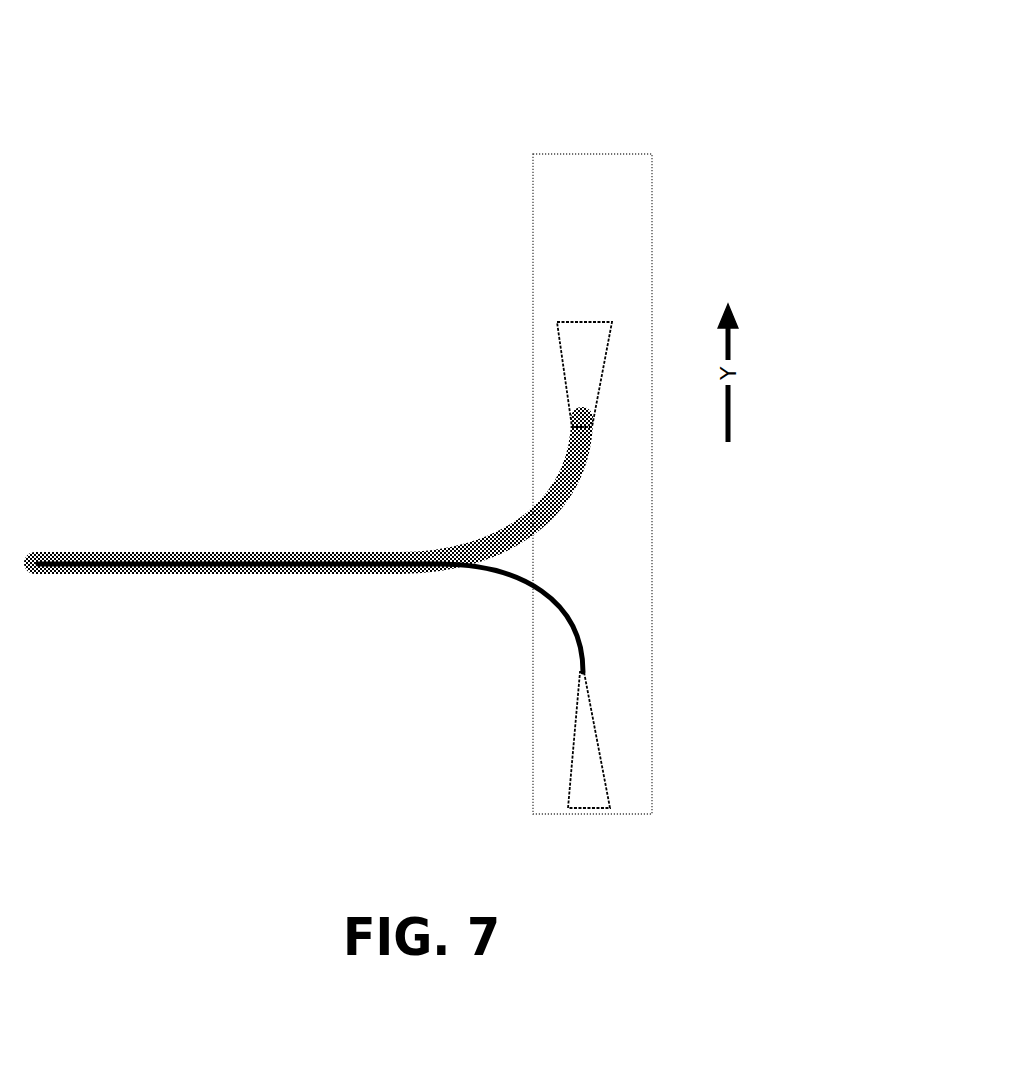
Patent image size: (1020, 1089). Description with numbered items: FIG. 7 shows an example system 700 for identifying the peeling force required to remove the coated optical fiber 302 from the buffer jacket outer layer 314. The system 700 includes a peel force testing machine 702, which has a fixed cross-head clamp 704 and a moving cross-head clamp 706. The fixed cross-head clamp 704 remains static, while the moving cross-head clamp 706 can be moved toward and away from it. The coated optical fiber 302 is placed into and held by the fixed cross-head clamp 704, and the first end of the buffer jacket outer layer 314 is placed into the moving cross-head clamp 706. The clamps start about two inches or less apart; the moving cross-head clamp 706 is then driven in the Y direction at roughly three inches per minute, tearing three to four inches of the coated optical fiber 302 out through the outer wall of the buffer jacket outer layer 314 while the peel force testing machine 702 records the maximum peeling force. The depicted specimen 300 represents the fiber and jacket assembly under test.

The system 700 is at (742, 48).
The peel force testing machine 702 is at (555, 176).
The fixed cross-head clamp 704 is at (603, 765).
The moving cross-head clamp 706 is at (557, 330).
The sample 300 is at (309, 545).
The coated optical fiber 302 is at (522, 588).
The buffer jacket outer layer 314 is at (512, 534).